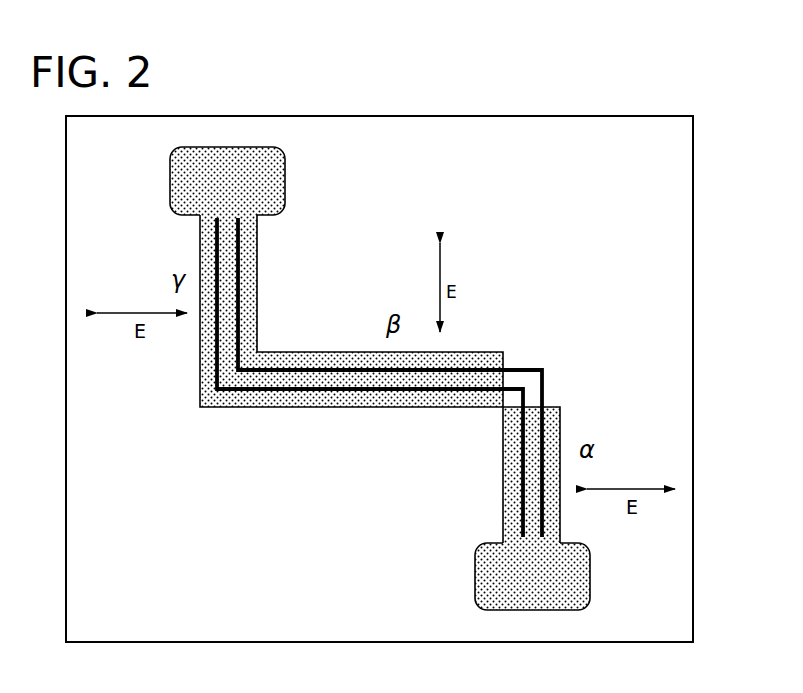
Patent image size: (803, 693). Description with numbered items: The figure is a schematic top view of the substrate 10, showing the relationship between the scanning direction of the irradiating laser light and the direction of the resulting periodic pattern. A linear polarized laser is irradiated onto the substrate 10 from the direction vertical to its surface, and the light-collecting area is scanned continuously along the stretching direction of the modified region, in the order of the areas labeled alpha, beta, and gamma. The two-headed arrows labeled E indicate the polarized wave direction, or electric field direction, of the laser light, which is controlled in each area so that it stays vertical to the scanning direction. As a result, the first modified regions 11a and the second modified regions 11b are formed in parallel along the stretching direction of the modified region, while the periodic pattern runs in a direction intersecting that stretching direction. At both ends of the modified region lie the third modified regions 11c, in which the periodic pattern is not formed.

The substrate 10 is at (660, 191).
The first modified regions 11a is at (387, 375).
The second modified regions 11b is at (288, 378).
The third modified regions 11c is at (262, 178).